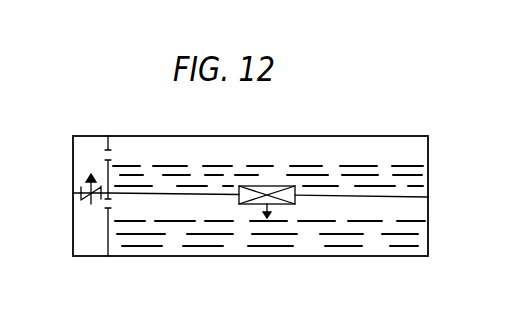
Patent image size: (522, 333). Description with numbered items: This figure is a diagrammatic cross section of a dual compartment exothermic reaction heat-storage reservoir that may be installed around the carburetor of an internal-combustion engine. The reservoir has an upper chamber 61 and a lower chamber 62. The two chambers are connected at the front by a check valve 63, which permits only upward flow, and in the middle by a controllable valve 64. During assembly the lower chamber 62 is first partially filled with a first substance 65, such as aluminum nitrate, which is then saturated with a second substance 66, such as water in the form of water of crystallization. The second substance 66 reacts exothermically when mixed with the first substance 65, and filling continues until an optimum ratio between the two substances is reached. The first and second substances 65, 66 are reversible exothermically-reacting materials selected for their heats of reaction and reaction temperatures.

The upper chamber 61 is at (262, 148).
The lower chamber 62 is at (222, 245).
The check valve 63 is at (83, 147).
The controllable valve 64 is at (280, 186).
The first substance 65 is at (347, 236).
The second substance 66 is at (408, 185).